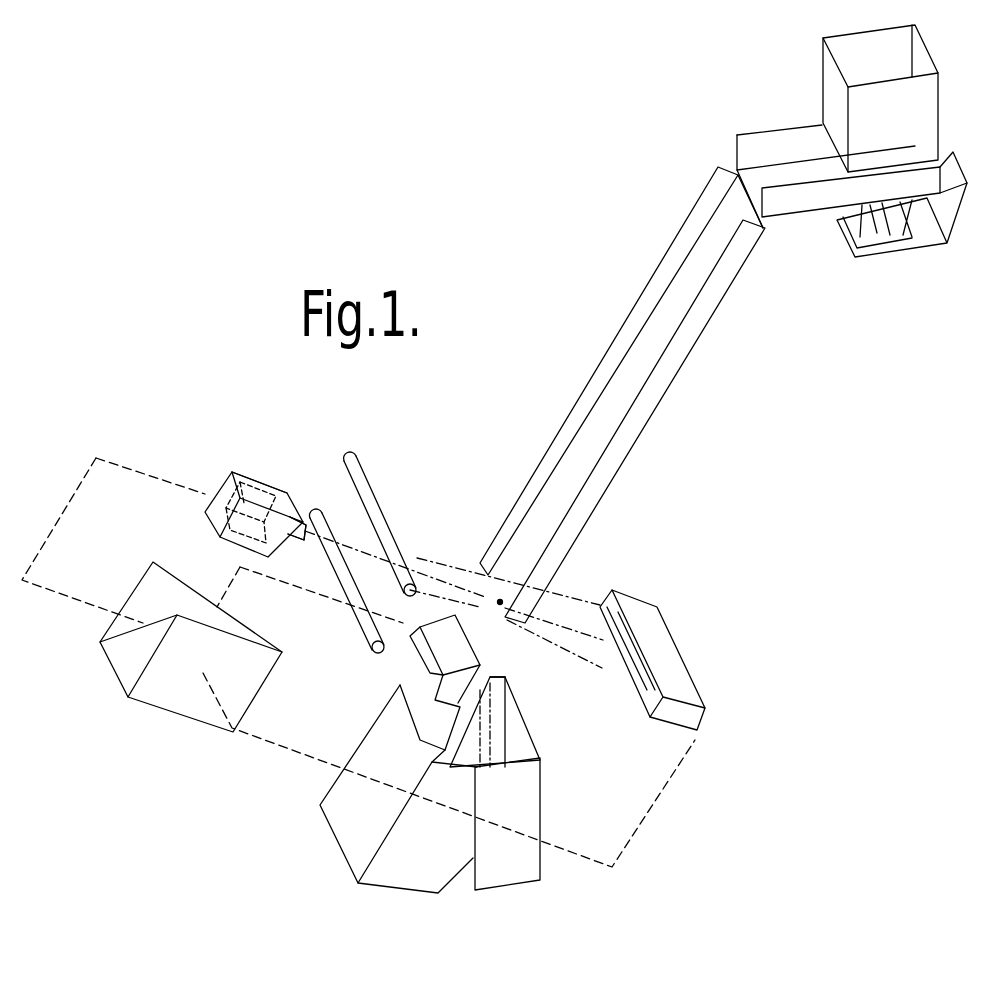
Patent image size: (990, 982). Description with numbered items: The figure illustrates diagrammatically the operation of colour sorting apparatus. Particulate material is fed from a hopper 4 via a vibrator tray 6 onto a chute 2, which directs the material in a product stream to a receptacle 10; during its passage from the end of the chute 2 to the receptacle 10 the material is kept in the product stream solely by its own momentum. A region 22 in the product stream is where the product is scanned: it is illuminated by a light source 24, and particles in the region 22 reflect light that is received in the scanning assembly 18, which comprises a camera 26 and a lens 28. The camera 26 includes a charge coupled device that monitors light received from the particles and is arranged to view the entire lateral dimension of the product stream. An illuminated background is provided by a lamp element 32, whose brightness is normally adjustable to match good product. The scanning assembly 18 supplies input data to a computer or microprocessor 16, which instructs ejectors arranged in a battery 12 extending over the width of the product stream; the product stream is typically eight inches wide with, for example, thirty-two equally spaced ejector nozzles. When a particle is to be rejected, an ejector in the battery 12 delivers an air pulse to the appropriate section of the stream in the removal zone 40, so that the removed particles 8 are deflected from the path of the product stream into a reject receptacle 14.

The chute 2 is at (577, 403).
The hopper 4 is at (837, 68).
The vibrator tray 6 is at (812, 214).
The removed particles 8 is at (495, 733).
The receptacle 10 is at (343, 857).
The battery of ejectors 12 is at (430, 672).
The reject receptacle 14 is at (541, 868).
The computer or microprocessor 16 is at (173, 712).
The scanning assembly 18 is at (232, 471).
The scanned region 22 is at (500, 600).
The light source 24 is at (316, 512).
The camera 26 is at (222, 487).
The lens 28 is at (304, 523).
The lamp element 32 is at (687, 658).
The removal zone 40 is at (487, 676).